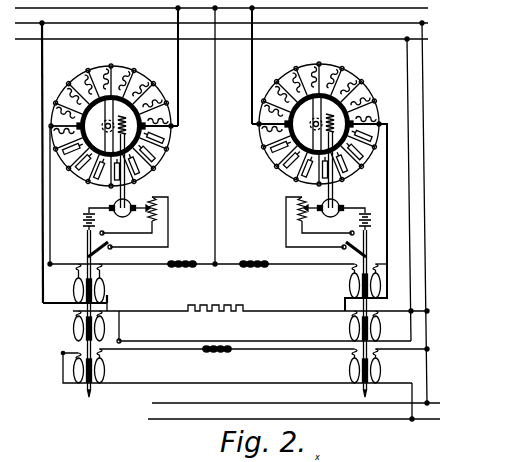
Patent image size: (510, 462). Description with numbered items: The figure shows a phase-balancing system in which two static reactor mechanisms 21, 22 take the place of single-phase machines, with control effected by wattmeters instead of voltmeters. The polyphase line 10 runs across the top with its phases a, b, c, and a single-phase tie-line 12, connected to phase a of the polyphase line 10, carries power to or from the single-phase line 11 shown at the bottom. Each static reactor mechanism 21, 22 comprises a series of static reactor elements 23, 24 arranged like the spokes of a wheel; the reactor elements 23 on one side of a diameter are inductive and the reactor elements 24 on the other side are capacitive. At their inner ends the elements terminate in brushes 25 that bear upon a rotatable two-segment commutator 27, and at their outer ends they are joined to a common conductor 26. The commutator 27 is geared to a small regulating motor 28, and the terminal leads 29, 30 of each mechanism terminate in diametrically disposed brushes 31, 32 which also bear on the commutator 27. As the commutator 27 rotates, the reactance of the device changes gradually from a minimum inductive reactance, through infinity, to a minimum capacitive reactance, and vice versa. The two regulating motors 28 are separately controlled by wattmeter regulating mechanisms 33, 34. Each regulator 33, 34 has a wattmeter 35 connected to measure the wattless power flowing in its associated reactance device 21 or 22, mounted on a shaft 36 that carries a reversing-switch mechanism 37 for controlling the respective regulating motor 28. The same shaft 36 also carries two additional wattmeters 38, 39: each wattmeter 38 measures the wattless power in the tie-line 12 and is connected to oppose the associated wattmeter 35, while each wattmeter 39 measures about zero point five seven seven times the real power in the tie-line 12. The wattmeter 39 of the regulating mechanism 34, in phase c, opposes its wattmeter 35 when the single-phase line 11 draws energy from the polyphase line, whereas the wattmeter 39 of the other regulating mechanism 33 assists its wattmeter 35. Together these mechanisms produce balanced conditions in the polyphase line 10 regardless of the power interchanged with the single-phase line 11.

The polyphase line 10 is at (35, 40).
The single-phase line 11 is at (162, 413).
The single-phase tie-line 12 is at (412, 82).
The static reactor mechanism 21 is at (108, 156).
The static reactor mechanism 22 is at (265, 181).
The static reactor element 23 is at (93, 74).
The static reactor element 24 is at (51, 155).
The brush 25 is at (143, 116).
The common conductor 26 is at (119, 133).
The two-segment commutator 27 is at (70, 90).
The regulating motor 28 is at (121, 216).
The terminal lead 29 is at (43, 72).
The terminal lead 30 is at (177, 72).
The brush 31 is at (55, 118).
The brush 32 is at (165, 133).
The wattmeter regulating mechanism 33 is at (77, 313).
The wattmeter regulating mechanism 34 is at (335, 301).
The wattmeter 35 is at (73, 290).
The shaft 36 is at (83, 258).
The reversing-switch mechanism 37 is at (81, 218).
The wattmeter 38 is at (73, 373).
The wattmeter 39 is at (74, 332).
The phase a is at (413, 60).
The phase b is at (75, 64).
The phase c is at (330, 60).